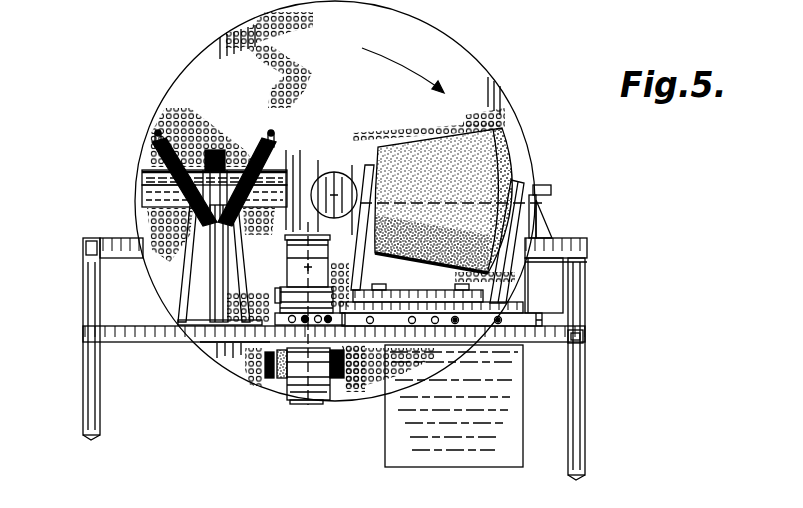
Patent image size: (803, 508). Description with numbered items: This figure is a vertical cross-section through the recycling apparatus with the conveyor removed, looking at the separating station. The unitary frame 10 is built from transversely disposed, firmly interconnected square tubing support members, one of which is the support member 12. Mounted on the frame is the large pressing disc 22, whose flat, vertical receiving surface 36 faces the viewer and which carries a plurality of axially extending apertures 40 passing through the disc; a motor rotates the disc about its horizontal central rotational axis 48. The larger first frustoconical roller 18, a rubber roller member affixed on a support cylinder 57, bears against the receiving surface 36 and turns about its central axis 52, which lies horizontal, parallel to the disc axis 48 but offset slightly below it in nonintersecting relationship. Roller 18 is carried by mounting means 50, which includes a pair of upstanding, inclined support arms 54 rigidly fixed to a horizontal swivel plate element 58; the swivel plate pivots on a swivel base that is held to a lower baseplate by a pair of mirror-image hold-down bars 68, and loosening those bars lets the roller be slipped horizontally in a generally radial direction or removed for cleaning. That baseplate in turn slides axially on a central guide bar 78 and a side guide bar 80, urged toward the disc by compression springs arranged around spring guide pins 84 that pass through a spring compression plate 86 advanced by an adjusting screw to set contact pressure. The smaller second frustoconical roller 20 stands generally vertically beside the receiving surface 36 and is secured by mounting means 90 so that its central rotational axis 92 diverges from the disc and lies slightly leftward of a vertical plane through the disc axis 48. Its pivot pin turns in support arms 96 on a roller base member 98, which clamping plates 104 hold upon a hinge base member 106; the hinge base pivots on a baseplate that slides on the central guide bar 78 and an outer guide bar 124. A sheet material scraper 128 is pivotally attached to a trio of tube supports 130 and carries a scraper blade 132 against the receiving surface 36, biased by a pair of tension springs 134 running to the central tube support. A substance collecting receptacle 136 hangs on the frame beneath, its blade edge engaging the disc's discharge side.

The unitary frame 10 is at (592, 331).
The square tubing support member 12 is at (82, 371).
The first frustoconical roller 18 is at (508, 135).
The second frustoconical roller 20 is at (287, 383).
The pressing disc 22 is at (458, 44).
The receiving surface 36 is at (183, 116).
The axially extending apertures 40 is at (363, 133).
The central rotational axis 48 is at (343, 166).
The mounting means 50 is at (522, 275).
The central axis of roller 52 is at (438, 205).
The support arms 54 is at (531, 228).
The support cylinder 57 is at (507, 173).
The swivel plate element 58 is at (403, 282).
The hold-down bars 68 is at (516, 308).
The central guide bar 78 is at (340, 366).
The side guide bar 80 is at (536, 335).
The spring guide pin 84 is at (460, 327).
The spring compression plate 86 is at (488, 327).
The mounting means 90 is at (272, 377).
The central rotational axis of roller 92 is at (307, 403).
The support arms 96 is at (325, 240).
The roller base member 98 is at (325, 262).
The clamping plates 104 is at (287, 270).
The hinge base member 106 is at (285, 303).
The outer guide bar 124 is at (236, 347).
The sheet material scraper 128 is at (136, 170).
The tube supports 130 is at (231, 296).
The scraper blade 132 is at (148, 193).
The tension springs 134 is at (214, 173).
The substance collecting receptacle 136 is at (403, 453).